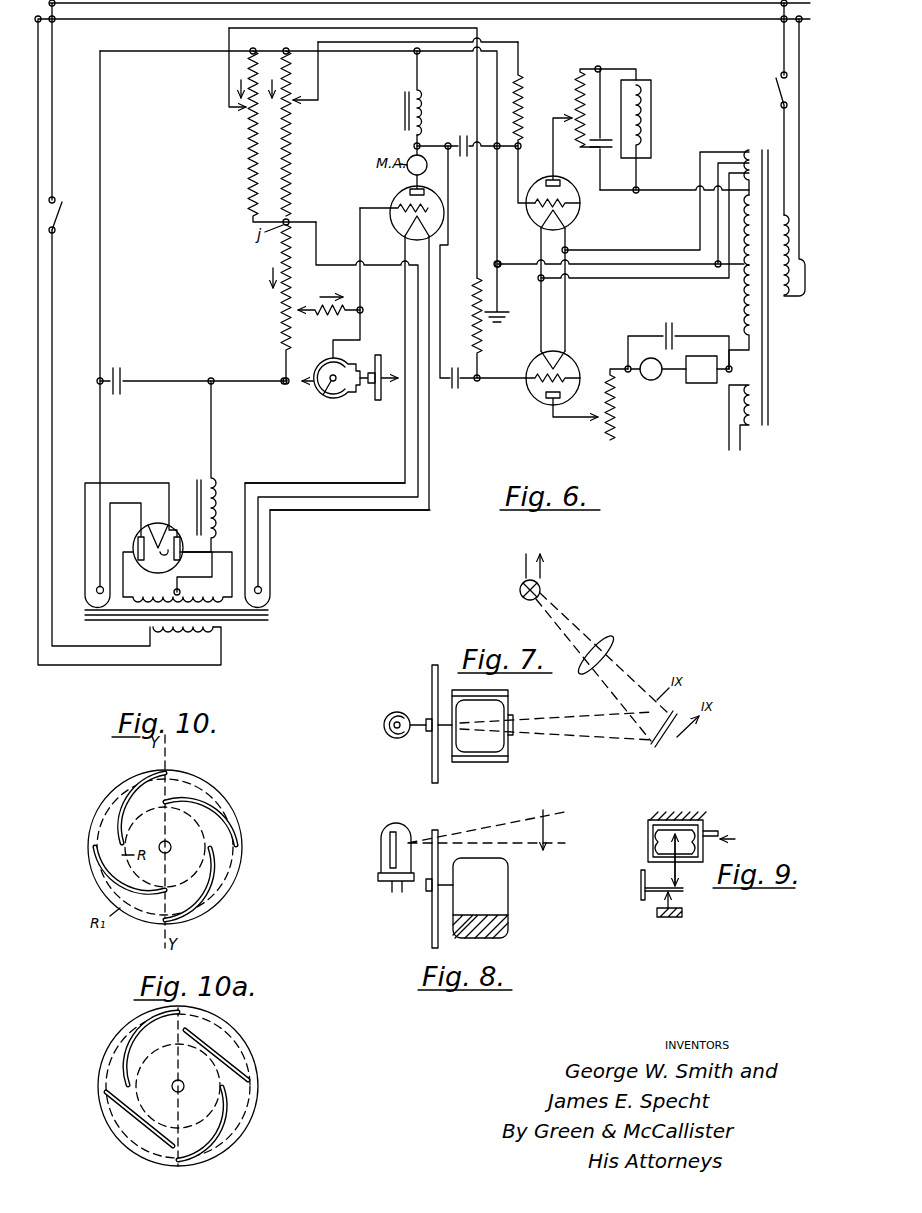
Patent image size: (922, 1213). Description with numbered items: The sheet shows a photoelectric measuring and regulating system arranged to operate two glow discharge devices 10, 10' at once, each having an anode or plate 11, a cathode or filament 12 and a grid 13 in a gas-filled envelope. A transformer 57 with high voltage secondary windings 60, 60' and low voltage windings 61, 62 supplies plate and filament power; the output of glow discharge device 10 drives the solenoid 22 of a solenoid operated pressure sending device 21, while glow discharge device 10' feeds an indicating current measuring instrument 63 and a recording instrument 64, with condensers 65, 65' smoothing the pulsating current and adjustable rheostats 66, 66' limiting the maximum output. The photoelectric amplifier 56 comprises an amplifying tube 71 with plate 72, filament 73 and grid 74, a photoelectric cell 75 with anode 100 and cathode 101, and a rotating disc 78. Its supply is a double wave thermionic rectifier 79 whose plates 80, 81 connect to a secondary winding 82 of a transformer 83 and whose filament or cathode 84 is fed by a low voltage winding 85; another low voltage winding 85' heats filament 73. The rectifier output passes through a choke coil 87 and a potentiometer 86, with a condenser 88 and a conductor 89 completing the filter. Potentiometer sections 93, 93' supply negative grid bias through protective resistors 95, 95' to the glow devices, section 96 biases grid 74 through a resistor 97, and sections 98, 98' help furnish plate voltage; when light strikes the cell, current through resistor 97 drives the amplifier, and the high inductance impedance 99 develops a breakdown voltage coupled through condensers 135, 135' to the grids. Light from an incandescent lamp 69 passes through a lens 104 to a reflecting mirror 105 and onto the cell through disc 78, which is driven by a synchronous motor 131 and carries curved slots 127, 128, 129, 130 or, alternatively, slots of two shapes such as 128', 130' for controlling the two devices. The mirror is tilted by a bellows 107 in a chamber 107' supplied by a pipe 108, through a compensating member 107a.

In FIG. 6, the glow discharge device 10 is at (543, 207).
In FIG. 6, the glow discharge device 10' is at (539, 378).
In FIG. 6, the anode or plate 11 is at (560, 182).
In FIG. 6, the cathode or filament 12 is at (570, 222).
In FIG. 6, the grid 13 is at (579, 204).
In FIG. 6, the solenoid operated pressure sending device 21 is at (679, 116).
In FIG. 6, the solenoid 22 is at (646, 133).
In FIG. 6, the photoelectric amplifier 56 is at (804, 290).
In FIG. 6, the transformer 57 is at (799, 341).
In FIG. 6, the high voltage secondary winding 60 is at (704, 230).
In FIG. 6, the secondary winding 60' is at (729, 317).
In FIG. 6, the low voltage winding 61 is at (753, 150).
In FIG. 6, the low voltage winding 62 is at (746, 418).
In FIG. 6, the indicating current measuring instrument 63 is at (651, 381).
In FIG. 6, the recording instrument 64 is at (699, 384).
In FIG. 6, the condenser 65 is at (607, 129).
In FIG. 6, the condenser 65' is at (678, 342).
In FIG. 6, the adjustable rheostat 66 is at (592, 108).
In FIG. 6, the adjustable rheostat 66' is at (628, 405).
In FIG. 7, the incandescent lamp 69 is at (540, 587).
In FIG. 6, the amplifying tube 71 is at (396, 204).
In FIG. 6, the plate 72 is at (424, 192).
In FIG. 6, the filament 73 is at (401, 246).
In FIG. 6, the grid 74 is at (404, 230).
In FIG. 6, the photoelectric cell 75 is at (320, 402).
In FIG. 7, the photoelectric cell 75 is at (392, 741).
In FIG. 8, the photoelectric cell 75 is at (382, 853).
In FIG. 6, the rotating screen or disc 78 is at (379, 355).
In FIG. 7, the rotating screen or disc 78 is at (432, 686).
In FIG. 8, the rotating screen or disc 78 is at (432, 923).
In FIG. 10, the rotating screen or disc 78 is at (200, 796).
In FIG. 6, the double wave thermionic rectifier 79 is at (166, 525).
In FIG. 6, the plate 80 is at (140, 540).
In FIG. 6, the plate 81 is at (182, 553).
In FIG. 6, the secondary winding 82 is at (150, 592).
In FIG. 6, the transformer 83 is at (132, 643).
In FIG. 6, the filament or cathode 84 is at (158, 549).
In FIG. 6, the low voltage winding 85 is at (78, 599).
In FIG. 6, the low voltage winding 85' is at (337, 546).
In FIG. 6, the potentiometer 86 is at (322, 203).
In FIG. 6, the choke coil 87 is at (212, 493).
In FIG. 6, the condenser 88 is at (124, 374).
In FIG. 6, the conductor 89 is at (100, 296).
In FIG. 6, the potentiometer section 93 is at (295, 71).
In FIG. 6, the potentiometer section 93' is at (220, 67).
In FIG. 6, the protective resistor 95 is at (529, 122).
In FIG. 6, the protective resistor 95' is at (485, 328).
In FIG. 6, the potentiometer section 96 is at (291, 276).
In FIG. 6, the resistor 97 is at (320, 318).
In FIG. 6, the potentiometer section 98 is at (300, 133).
In FIG. 6, the potentiometer section 98' is at (267, 136).
In FIG. 6, the impedance 99 is at (423, 111).
In FIG. 6, the anode 100 is at (365, 393).
In FIG. 6, the cathode 101 is at (334, 399).
In FIG. 7, the lens 104 is at (604, 643).
In FIG. 7, the reflecting mirror 105 is at (666, 746).
In FIG. 9, the reflecting mirror 105 is at (641, 890).
In FIG. 9, the bellows 107 is at (658, 837).
In FIG. 9, the chamber 107' is at (646, 847).
In FIG. 9, the member 107a is at (678, 870).
In FIG. 9, the pipe 108 is at (713, 831).
In FIG. 10, the curved slot 127 is at (130, 801).
In FIG. 10A, the curved slot 127 is at (140, 1041).
In FIG. 10, the curved slot 128 is at (224, 822).
In FIG. 10A, the slot 128' is at (241, 1055).
In FIG. 10, the curved slot 129 is at (200, 900).
In FIG. 10A, the curved slot 129 is at (215, 1121).
In FIG. 10, the curved slot 130 is at (103, 869).
In FIG. 10A, the slot 130' is at (112, 1119).
In FIG. 7, the synchronous motor 131 is at (500, 742).
In FIG. 8, the synchronous motor 131 is at (508, 933).
In FIG. 6, the condenser 135 is at (467, 140).
In FIG. 6, the blocking condenser 135' is at (457, 392).